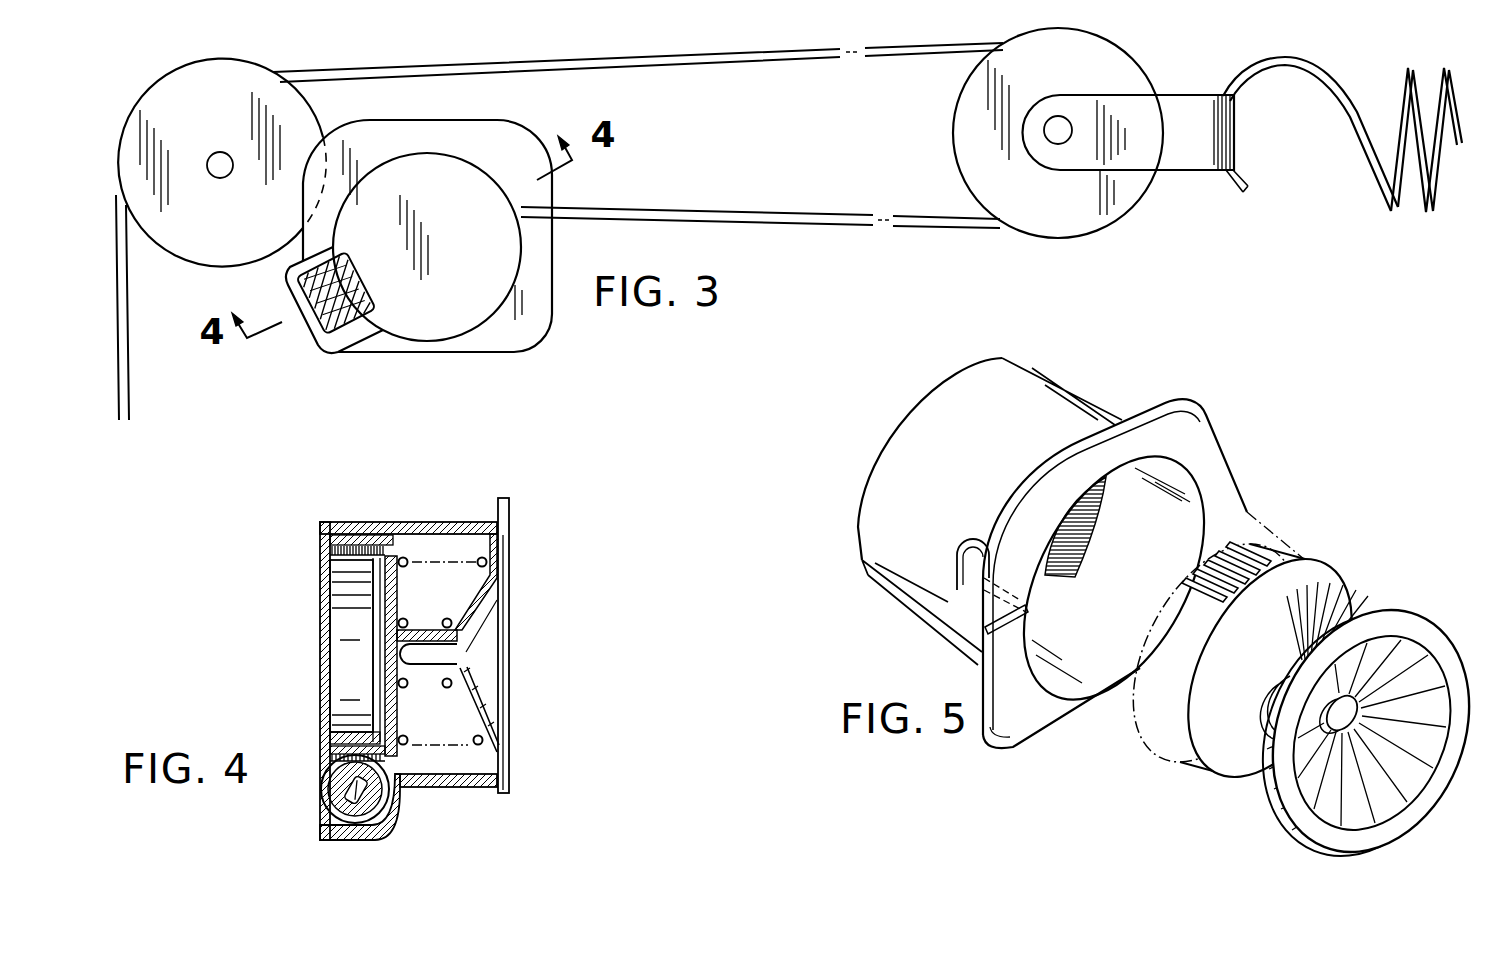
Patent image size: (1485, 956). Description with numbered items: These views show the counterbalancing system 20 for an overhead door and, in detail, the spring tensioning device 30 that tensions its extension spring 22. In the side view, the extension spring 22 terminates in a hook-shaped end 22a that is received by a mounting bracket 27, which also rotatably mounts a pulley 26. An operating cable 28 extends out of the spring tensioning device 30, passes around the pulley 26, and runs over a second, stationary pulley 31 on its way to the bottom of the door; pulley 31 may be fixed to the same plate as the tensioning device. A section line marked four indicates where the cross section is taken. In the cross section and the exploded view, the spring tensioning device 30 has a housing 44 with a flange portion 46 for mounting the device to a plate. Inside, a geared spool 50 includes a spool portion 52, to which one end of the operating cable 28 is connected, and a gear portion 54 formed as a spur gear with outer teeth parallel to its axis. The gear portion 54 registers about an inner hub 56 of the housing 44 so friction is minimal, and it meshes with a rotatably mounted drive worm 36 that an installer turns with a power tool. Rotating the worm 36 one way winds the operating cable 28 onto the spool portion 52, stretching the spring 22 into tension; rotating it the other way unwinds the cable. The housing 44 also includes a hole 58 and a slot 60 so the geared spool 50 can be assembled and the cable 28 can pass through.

In FIG. 3, the counterbalancing system 20 is at (1195, 235).
In FIG. 3, the extension spring 22 is at (1372, 166).
In FIG. 3, the hook-shaped end 22a is at (1250, 80).
In FIG. 3, the pulley 26 is at (952, 160).
In FIG. 3, the mounting bracket 27 is at (1188, 95).
In FIG. 3, the operating cable 28 is at (128, 406).
In FIG. 4, the operating cable 28 is at (407, 558).
In FIG. 3, the spring tensioning device 30 is at (447, 360).
In FIG. 4, the spring tensioning device 30 is at (268, 660).
In FIG. 3, the stationary pulley 31 is at (228, 62).
In FIG. 3, the drive worm 36 is at (318, 343).
In FIG. 4, the drive worm 36 is at (345, 800).
In FIG. 5, the drive worm 36 is at (1092, 543).
In FIG. 3, the housing 44 is at (470, 121).
In FIG. 4, the housing 44 is at (363, 522).
In FIG. 5, the housing 44 is at (1088, 395).
In FIG. 3, the flange portion 46 is at (432, 237).
In FIG. 4, the flange portion 46 is at (509, 513).
In FIG. 5, the flange portion 46 is at (1220, 431).
In FIG. 4, the geared spool 50 is at (489, 676).
In FIG. 5, the geared spool 50 is at (1372, 601).
In FIG. 4, the spool portion 52 is at (500, 604).
In FIG. 5, the spool portion 52 is at (1337, 593).
In FIG. 3, the gear portion 54 is at (355, 284).
In FIG. 4, the gear portion 54 is at (367, 545).
In FIG. 5, the gear portion 54 is at (1245, 550).
In FIG. 4, the inner hub 56 is at (340, 595).
In FIG. 5, the hole 58 is at (957, 567).
In FIG. 5, the slot 60 is at (1030, 624).